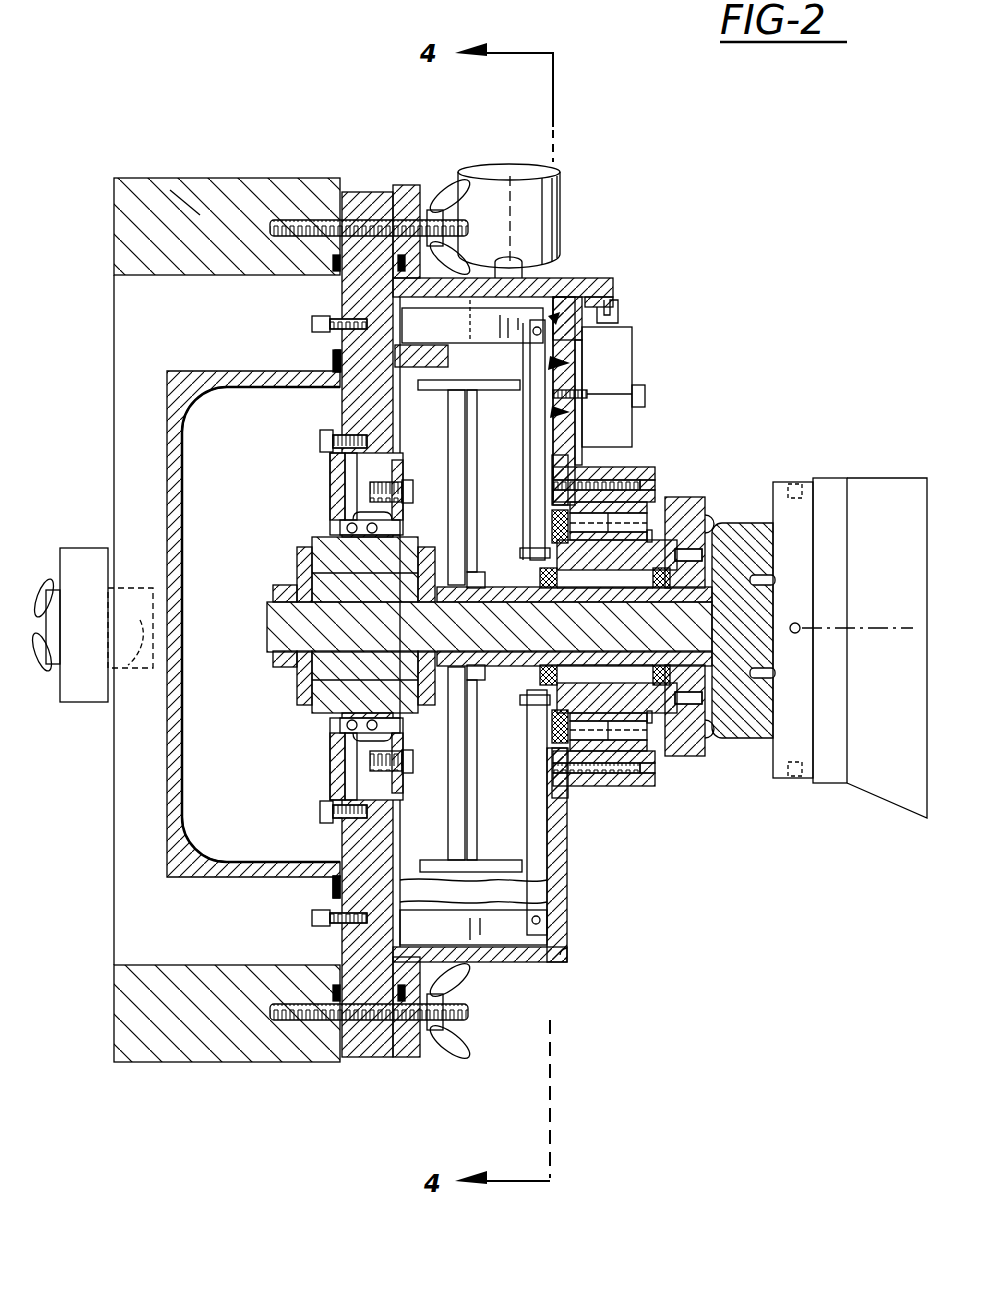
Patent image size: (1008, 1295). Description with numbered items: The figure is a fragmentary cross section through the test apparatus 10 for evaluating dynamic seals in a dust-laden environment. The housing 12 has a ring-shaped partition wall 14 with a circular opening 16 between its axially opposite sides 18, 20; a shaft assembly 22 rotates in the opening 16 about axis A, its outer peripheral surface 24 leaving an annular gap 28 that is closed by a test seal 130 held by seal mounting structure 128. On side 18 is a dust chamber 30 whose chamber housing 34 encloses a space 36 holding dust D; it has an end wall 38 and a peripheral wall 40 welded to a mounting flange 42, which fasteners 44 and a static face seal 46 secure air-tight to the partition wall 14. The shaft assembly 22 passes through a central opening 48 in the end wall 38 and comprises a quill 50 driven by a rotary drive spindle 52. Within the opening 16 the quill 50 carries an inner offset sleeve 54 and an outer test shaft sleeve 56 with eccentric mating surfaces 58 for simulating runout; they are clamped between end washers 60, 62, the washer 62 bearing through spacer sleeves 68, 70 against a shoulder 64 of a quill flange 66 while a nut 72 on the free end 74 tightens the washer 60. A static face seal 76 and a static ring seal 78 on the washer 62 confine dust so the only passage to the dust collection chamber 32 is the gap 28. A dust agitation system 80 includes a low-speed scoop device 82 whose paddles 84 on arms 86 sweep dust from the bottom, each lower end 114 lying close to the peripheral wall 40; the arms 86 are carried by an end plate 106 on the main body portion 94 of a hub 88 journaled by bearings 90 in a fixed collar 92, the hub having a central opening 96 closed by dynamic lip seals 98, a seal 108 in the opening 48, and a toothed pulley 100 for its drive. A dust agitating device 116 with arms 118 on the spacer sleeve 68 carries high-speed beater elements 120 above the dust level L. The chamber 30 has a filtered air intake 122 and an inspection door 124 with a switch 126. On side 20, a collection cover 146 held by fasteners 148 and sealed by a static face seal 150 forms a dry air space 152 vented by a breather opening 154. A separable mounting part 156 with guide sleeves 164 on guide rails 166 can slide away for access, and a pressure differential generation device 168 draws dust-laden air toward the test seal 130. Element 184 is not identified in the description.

The test apparatus 10 is at (752, 198).
The housing 12 is at (228, 170).
The partition wall 14 is at (348, 190).
The opening 16 is at (340, 770).
The side of the partition wall 18 is at (470, 768).
The side of the partition wall 20 is at (322, 812).
The shaft assembly 22 is at (305, 548).
The outer peripheral surface 24 is at (345, 722).
The annular gap 28 is at (320, 430).
The dust chamber 30 is at (556, 435).
The dust collection chamber 32 is at (155, 392).
The chamber housing 34 is at (567, 938).
The enclosed space 36 is at (514, 844).
The end wall 38 is at (568, 872).
The peripheral wall 40 is at (540, 968).
The mounting flange 42 is at (410, 1060).
The fasteners 44 is at (438, 200).
The static face seal 46 is at (400, 218).
The central opening 48 is at (522, 733).
The quill 50 is at (489, 627).
The rotary drive spindle 52 is at (880, 480).
The inner offset sleeve 54 is at (305, 640).
The outer test shaft sleeve 56 is at (295, 668).
The eccentric mating surfaces 58 is at (300, 680).
The end washer 60 is at (305, 575).
The end washer 62 is at (455, 700).
The shoulder 64 is at (697, 525).
The flange 66 is at (745, 548).
The spacer sleeve 68 is at (512, 588).
The spacer sleeve 70 is at (700, 636).
The nut 72 is at (285, 594).
The free end 74 is at (275, 625).
The static face seal 76 is at (400, 668).
The static ring seal 78 is at (438, 642).
The dust agitation system 80 is at (570, 300).
The dust redistribution device 82 is at (625, 345).
The paddles 84 is at (472, 320).
The arms 86 is at (600, 395).
The hub 88 is at (652, 530).
The bearings 90 is at (632, 510).
The fixed collar 92 is at (625, 468).
The main body portion 94 is at (750, 660).
The central opening 96 is at (680, 745).
The dynamic lip seals 98 is at (690, 580).
The toothed pulley 100 is at (706, 755).
The end plate 106 is at (520, 522).
The seal 108 is at (540, 478).
The lower end 114 is at (520, 966).
The dust agitating device 116 is at (345, 838).
The arms 118 is at (548, 808).
The beater elements 120 is at (335, 882).
The filtered air intake 122 is at (565, 195).
The inspection door 124 is at (600, 285).
The switch 126 is at (616, 305).
The seal mounting structure 128 is at (345, 458).
The test seal 130 is at (395, 505).
The collection cover 146 is at (190, 372).
The fasteners 148 is at (312, 324).
The static face seal 150 is at (330, 358).
The dry air space 152 is at (244, 433).
The breather opening 154 is at (163, 472).
The separable mounting part 156 is at (172, 185).
The guide sleeves 164 is at (82, 692).
The guide rails 166 is at (52, 610).
The pressure differential generation device 168 is at (312, 512).
The box 184 is at (472, 325).
The central rotation axis A is at (895, 628).
The accumulated level L is at (542, 832).
The dust D is at (566, 890).